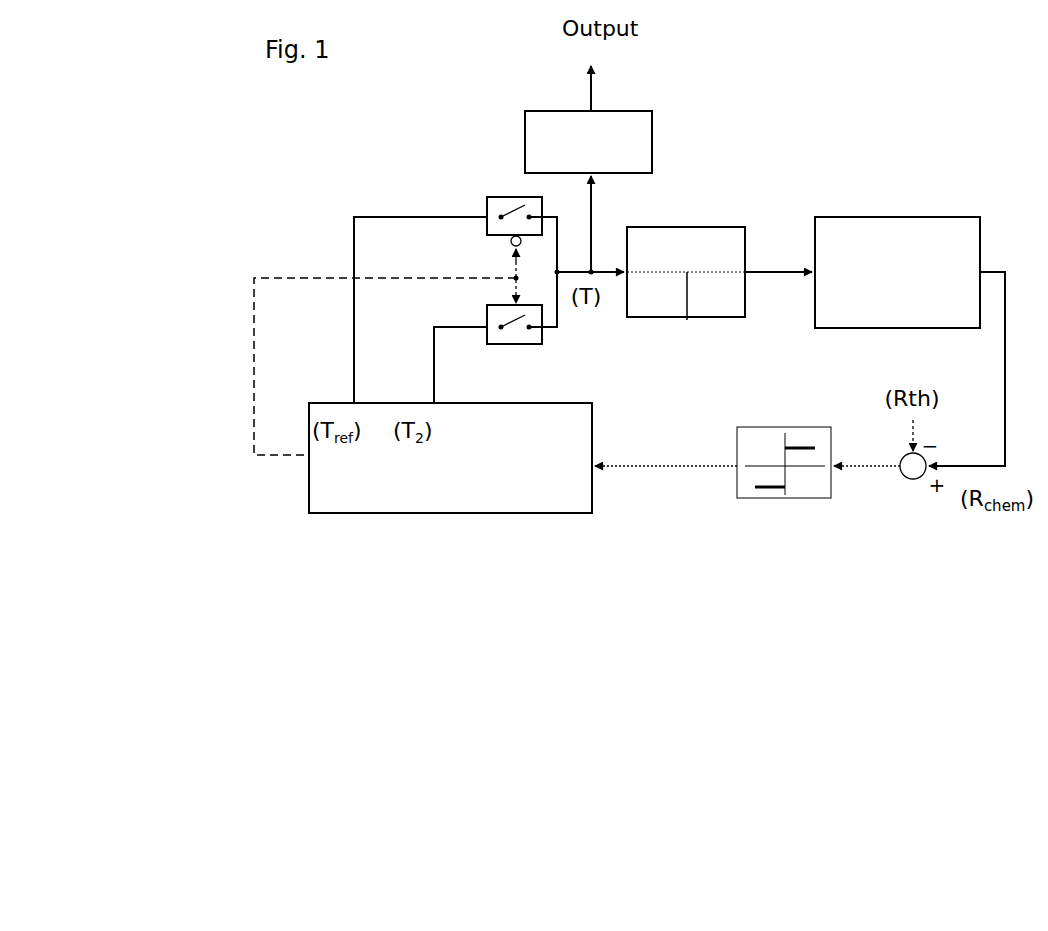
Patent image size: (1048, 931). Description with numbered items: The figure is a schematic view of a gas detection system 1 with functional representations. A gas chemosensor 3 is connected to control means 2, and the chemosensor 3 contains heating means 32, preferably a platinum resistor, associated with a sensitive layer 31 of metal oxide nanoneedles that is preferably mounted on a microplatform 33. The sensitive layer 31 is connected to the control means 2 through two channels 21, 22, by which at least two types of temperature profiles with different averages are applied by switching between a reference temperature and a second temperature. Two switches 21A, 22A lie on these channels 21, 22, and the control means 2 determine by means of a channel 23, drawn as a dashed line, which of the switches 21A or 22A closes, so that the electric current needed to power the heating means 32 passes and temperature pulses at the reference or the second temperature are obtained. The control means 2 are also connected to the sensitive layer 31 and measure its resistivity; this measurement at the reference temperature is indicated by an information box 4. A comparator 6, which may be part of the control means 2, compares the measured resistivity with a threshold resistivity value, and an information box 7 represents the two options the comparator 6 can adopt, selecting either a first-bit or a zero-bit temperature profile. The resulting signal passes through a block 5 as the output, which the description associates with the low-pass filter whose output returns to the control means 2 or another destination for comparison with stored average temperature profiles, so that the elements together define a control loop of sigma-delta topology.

The gas detection system 1 is at (288, 515).
The control means 2 is at (523, 495).
The gas chemosensor 3 is at (701, 212).
The information box 4 is at (890, 285).
The evaluation unit 5 is at (584, 155).
The comparator 6 is at (913, 480).
The information box 7 is at (798, 492).
The channel 21 is at (353, 250).
The switch 21A is at (486, 197).
The channel 22 is at (440, 365).
The switch 22A is at (533, 346).
The channel 23 is at (254, 387).
The sensitive layer 31 is at (709, 296).
The heating means 32 is at (663, 296).
The microplatform 33 is at (672, 266).